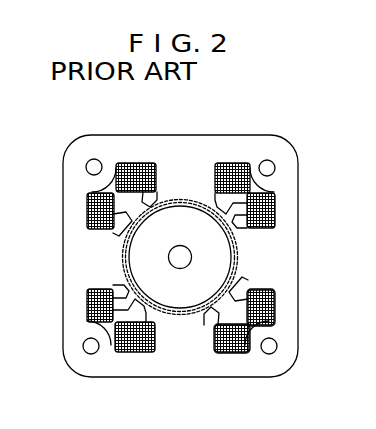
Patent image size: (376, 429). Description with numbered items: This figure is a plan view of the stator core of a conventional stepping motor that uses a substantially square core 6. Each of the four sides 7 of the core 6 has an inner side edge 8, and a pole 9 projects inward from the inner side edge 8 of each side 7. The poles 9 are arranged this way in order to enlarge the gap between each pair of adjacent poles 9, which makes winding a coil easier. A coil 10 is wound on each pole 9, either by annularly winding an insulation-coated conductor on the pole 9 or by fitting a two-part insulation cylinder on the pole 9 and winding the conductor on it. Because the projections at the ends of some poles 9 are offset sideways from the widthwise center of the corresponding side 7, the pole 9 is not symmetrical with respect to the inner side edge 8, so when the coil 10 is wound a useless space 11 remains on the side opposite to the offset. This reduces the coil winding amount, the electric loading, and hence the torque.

The core 6 is at (288, 270).
The side 7 is at (193, 150).
The inner side edge 8 is at (271, 318).
The pole 9 is at (172, 167).
The coil 10 is at (274, 302).
The useless space 11 is at (92, 328).